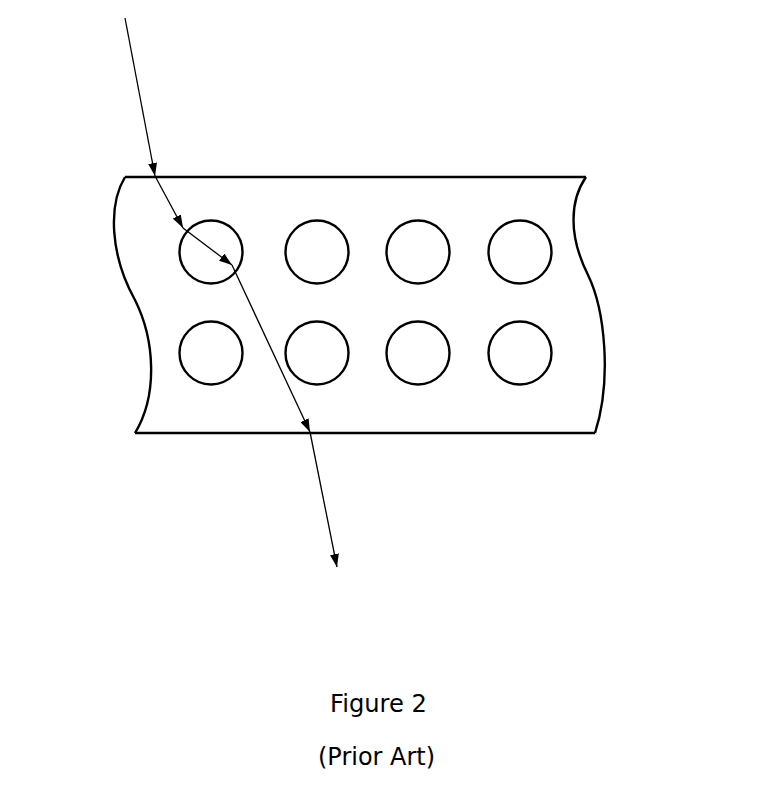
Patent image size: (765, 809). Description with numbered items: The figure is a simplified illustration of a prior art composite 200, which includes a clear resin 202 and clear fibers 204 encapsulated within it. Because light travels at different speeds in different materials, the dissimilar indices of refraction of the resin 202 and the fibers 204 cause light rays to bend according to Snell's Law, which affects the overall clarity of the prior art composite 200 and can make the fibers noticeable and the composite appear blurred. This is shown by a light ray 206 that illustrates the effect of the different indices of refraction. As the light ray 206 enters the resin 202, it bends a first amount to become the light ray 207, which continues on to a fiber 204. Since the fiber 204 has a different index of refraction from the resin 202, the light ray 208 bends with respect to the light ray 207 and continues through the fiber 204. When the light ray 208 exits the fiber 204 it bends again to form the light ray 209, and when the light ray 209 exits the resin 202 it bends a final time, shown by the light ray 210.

The prior art composite 200 is at (400, 363).
The resin 202 is at (578, 176).
The fibers 204 is at (417, 220).
The light ray 206 is at (136, 59).
The light ray 207 is at (157, 185).
The light ray 208 is at (180, 245).
The light ray 209 is at (273, 358).
The light ray 210 is at (318, 467).